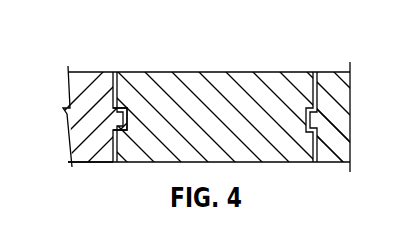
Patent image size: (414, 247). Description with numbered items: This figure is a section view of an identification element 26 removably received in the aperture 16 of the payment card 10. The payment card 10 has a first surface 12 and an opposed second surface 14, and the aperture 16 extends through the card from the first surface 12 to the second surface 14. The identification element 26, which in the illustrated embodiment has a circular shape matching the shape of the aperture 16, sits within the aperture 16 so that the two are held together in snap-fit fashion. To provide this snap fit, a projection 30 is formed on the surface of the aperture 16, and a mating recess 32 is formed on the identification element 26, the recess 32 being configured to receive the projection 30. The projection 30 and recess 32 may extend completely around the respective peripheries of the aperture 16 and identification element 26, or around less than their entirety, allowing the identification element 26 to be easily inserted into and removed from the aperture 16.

The payment card 10 is at (232, 125).
The first surface 12 is at (84, 72).
The second surface 14 is at (85, 163).
The aperture 16 is at (118, 72).
The identification element 26 is at (285, 150).
The projection 30 is at (126, 112).
The mating recess 32 is at (311, 113).